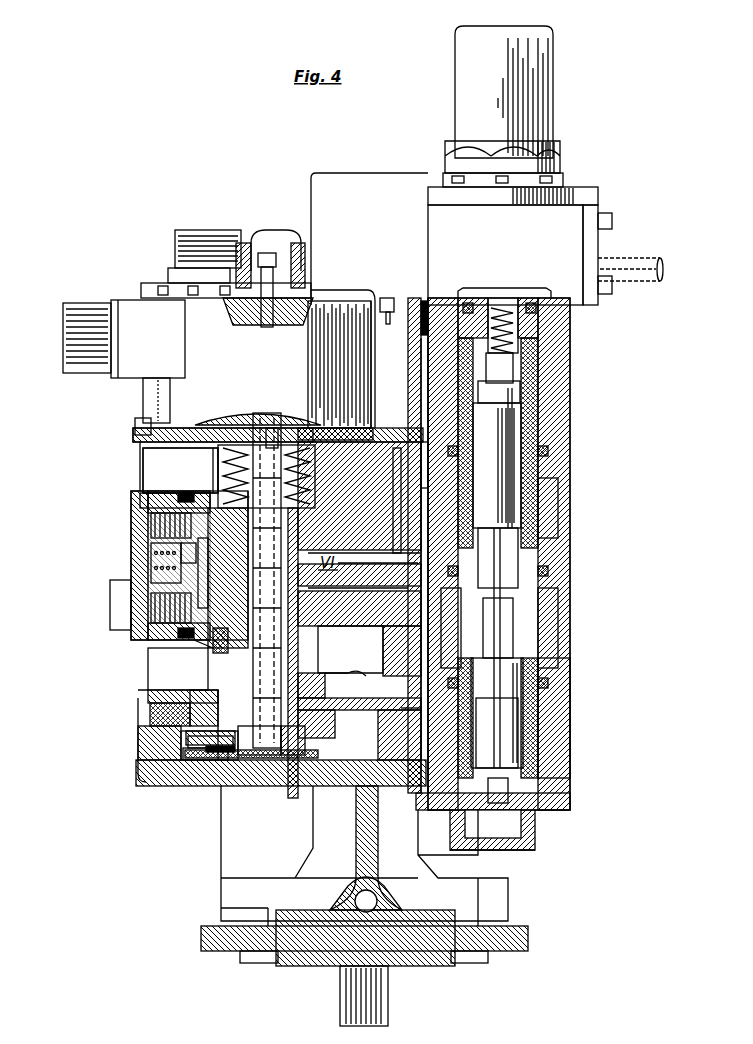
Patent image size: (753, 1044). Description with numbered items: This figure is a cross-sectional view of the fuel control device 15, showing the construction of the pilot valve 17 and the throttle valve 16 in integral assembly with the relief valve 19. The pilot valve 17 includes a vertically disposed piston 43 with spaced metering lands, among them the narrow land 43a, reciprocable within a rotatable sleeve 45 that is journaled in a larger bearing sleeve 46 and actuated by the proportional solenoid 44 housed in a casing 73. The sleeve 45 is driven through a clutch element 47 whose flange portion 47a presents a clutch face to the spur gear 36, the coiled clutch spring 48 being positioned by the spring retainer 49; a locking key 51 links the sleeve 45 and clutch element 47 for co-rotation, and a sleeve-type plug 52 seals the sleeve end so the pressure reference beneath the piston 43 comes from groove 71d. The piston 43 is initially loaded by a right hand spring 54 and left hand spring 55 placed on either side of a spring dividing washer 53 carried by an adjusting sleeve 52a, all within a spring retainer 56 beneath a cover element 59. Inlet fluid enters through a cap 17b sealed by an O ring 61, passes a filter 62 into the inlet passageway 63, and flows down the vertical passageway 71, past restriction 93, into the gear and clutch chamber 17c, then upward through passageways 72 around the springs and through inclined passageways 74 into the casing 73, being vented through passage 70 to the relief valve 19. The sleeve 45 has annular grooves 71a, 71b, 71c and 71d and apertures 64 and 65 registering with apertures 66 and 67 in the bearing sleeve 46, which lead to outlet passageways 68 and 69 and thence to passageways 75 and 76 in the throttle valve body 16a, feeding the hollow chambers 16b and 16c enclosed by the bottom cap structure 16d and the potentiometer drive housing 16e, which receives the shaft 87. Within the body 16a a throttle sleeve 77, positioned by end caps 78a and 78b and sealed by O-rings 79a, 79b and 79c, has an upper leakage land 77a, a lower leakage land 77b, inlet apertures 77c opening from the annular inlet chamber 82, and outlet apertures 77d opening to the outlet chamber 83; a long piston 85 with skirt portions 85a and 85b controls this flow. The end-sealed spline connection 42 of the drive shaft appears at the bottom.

The fuel control device 15 is at (125, 738).
The throttle valve 16 is at (562, 416).
The throttle valve body 16a is at (545, 722).
The hollow chamber 16b is at (510, 323).
The hollow chamber 16c is at (490, 818).
The bottom cap structure 16d is at (525, 836).
The potentiometer drive housing 16e is at (570, 248).
The pilot valve 17 is at (125, 526).
The cap 17b is at (128, 538).
The gear and clutch chamber 17c is at (243, 770).
The relief valve 19 is at (552, 108).
The spur gear 36 is at (185, 742).
The end-sealed spline connection 42 is at (378, 980).
The piston 43 is at (280, 300).
The metering land 43a is at (400, 694).
The proportional solenoid 44 is at (303, 307).
The rotatable sleeve 45 is at (345, 675).
The bearing sleeve 46 is at (160, 622).
The clutch element 47 is at (205, 770).
The radially extending flange portion 47a is at (182, 760).
The coiled clutch spring 48 is at (212, 688).
The spring retainer 49 is at (215, 660).
The locking key 51 is at (259, 740).
The sleeve-type plug 52 is at (258, 690).
The adjusting sleeve 52a is at (236, 412).
The spring dividing washer 53 is at (206, 457).
The right hand spring 54 is at (222, 476).
The left hand spring 55 is at (220, 415).
The spring retainer 56 is at (330, 412).
The cover element 59 is at (275, 398).
The O ring 61 is at (180, 633).
The filter 62 is at (118, 581).
The inlet passageway 63 is at (182, 559).
The diametral aperture 64 is at (176, 488).
The diametral aperture 65 is at (190, 604).
The aperture 66 is at (350, 649).
The aperture 67 is at (358, 626).
The outlet passageway 68 is at (378, 604).
The outlet passageway 69 is at (364, 609).
The passage 70 is at (420, 498).
The vertical passageway 71 is at (160, 710).
The annular groove 71a is at (160, 512).
The annular groove 71b is at (172, 566).
The annular groove 71c is at (172, 610).
The annular groove 71d is at (212, 645).
The vertical passageway 72 is at (146, 494).
The casing 73 is at (379, 288).
The angularly inclined fluid passageway 74 is at (175, 425).
The passageway 75 is at (418, 366).
The passageway 76 is at (400, 664).
The throttle sleeve 77 is at (520, 482).
The upper leakage land 77a is at (535, 395).
The lower leakage land 77b is at (495, 690).
The inlet apertures 77c is at (510, 530).
The outlet apertures 77d is at (480, 608).
The end cap 78a is at (528, 343).
The end cap 78b is at (525, 755).
The O-ring 79a is at (540, 445).
The O-ring 79b is at (548, 565).
The O-ring 79c is at (545, 675).
The inlet chamber 82 is at (540, 491).
The outlet chamber 83 is at (540, 592).
The long piston 85 is at (495, 553).
The skirt portion 85a is at (503, 432).
The skirt portion 85b is at (490, 708).
The shaft 87 is at (652, 262).
The restriction 93 is at (195, 634).